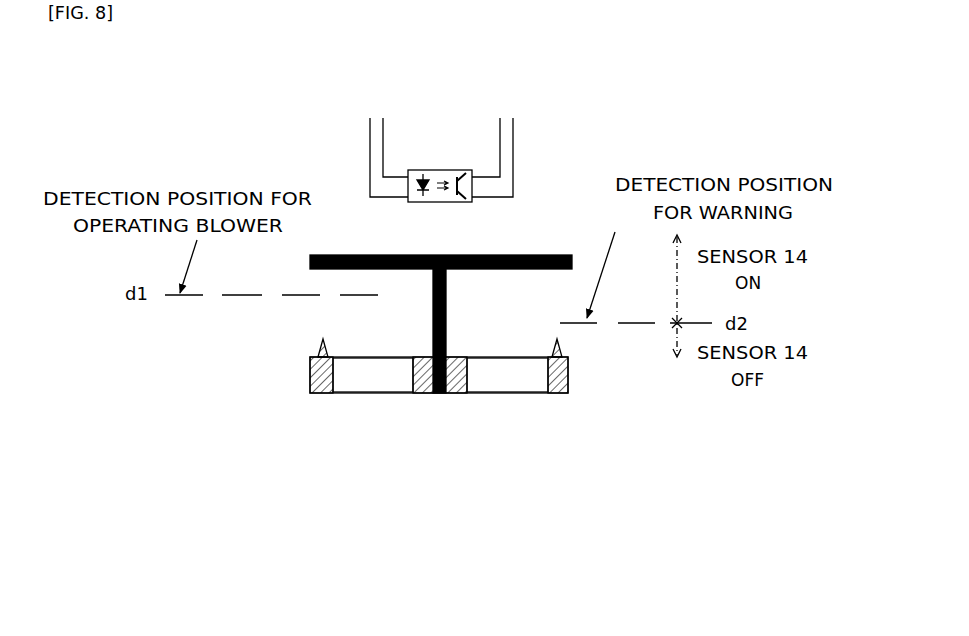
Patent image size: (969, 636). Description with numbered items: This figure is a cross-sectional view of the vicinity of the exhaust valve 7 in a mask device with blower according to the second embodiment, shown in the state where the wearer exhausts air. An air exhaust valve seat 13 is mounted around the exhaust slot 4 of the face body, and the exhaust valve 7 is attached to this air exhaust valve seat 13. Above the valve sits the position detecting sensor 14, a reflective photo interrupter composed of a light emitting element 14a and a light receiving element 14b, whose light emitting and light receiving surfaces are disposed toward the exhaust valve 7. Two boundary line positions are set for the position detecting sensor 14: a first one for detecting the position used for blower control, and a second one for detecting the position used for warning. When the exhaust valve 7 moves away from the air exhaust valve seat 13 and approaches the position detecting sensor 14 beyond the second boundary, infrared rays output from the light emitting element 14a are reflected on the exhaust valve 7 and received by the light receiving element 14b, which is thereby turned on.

The exhaust slot 4 is at (385, 382).
The exhaust valve 7 is at (552, 255).
The air exhaust valve seat 13 is at (568, 376).
The position detecting sensor 14 is at (444, 144).
The light emitting element 14a is at (422, 168).
The light receiving element 14b is at (458, 168).